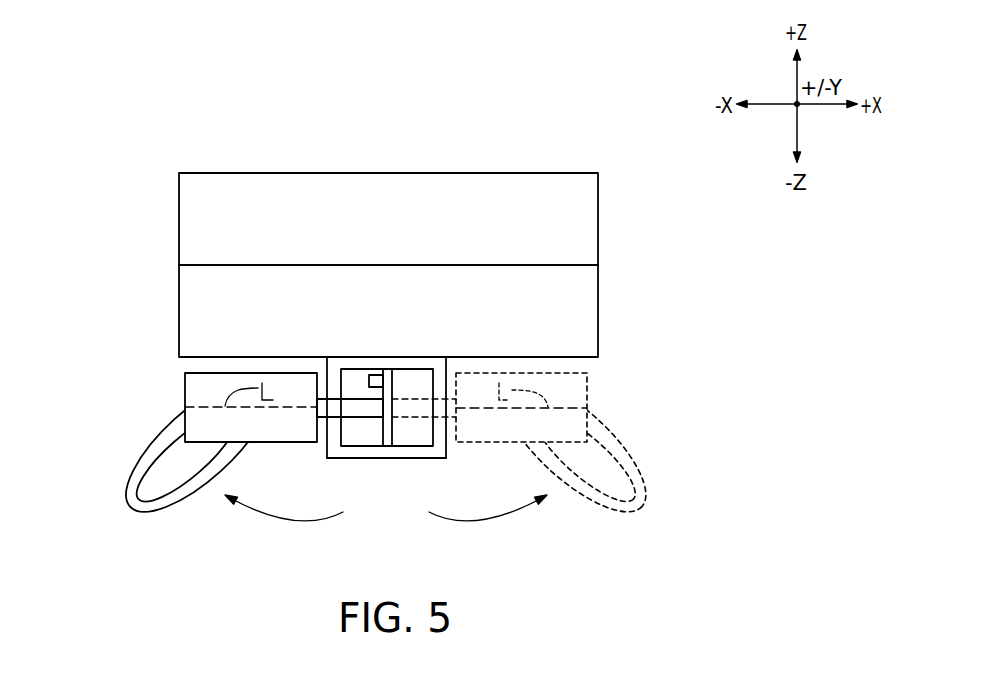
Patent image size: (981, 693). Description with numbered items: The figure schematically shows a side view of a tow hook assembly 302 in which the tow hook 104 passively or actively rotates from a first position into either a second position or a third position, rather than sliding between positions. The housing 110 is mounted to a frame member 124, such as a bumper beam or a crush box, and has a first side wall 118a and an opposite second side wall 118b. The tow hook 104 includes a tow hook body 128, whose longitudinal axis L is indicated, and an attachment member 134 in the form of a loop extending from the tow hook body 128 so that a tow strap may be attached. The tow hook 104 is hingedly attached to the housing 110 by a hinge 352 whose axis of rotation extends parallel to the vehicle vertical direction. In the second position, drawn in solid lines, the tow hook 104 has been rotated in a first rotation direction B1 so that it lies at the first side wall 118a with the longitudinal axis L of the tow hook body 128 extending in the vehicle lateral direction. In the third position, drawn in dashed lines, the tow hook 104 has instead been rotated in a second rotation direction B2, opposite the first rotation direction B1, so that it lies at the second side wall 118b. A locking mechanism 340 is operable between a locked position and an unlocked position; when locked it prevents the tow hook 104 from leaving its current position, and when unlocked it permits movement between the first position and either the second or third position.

The frame member 124 is at (363, 173).
The tow hook 104 is at (148, 410).
The tow hook body 128 is at (193, 390).
The attachment member 134 is at (127, 488).
The housing 110 is at (381, 459).
The first side wall 118a is at (326, 450).
The second side wall 118b is at (449, 451).
The locking mechanism 340 is at (368, 380).
The hinge 352 is at (403, 387).
The tow hook assembly 302 is at (762, 380).
The first rotation direction B1 is at (295, 521).
The second rotation direction B2 is at (477, 521).